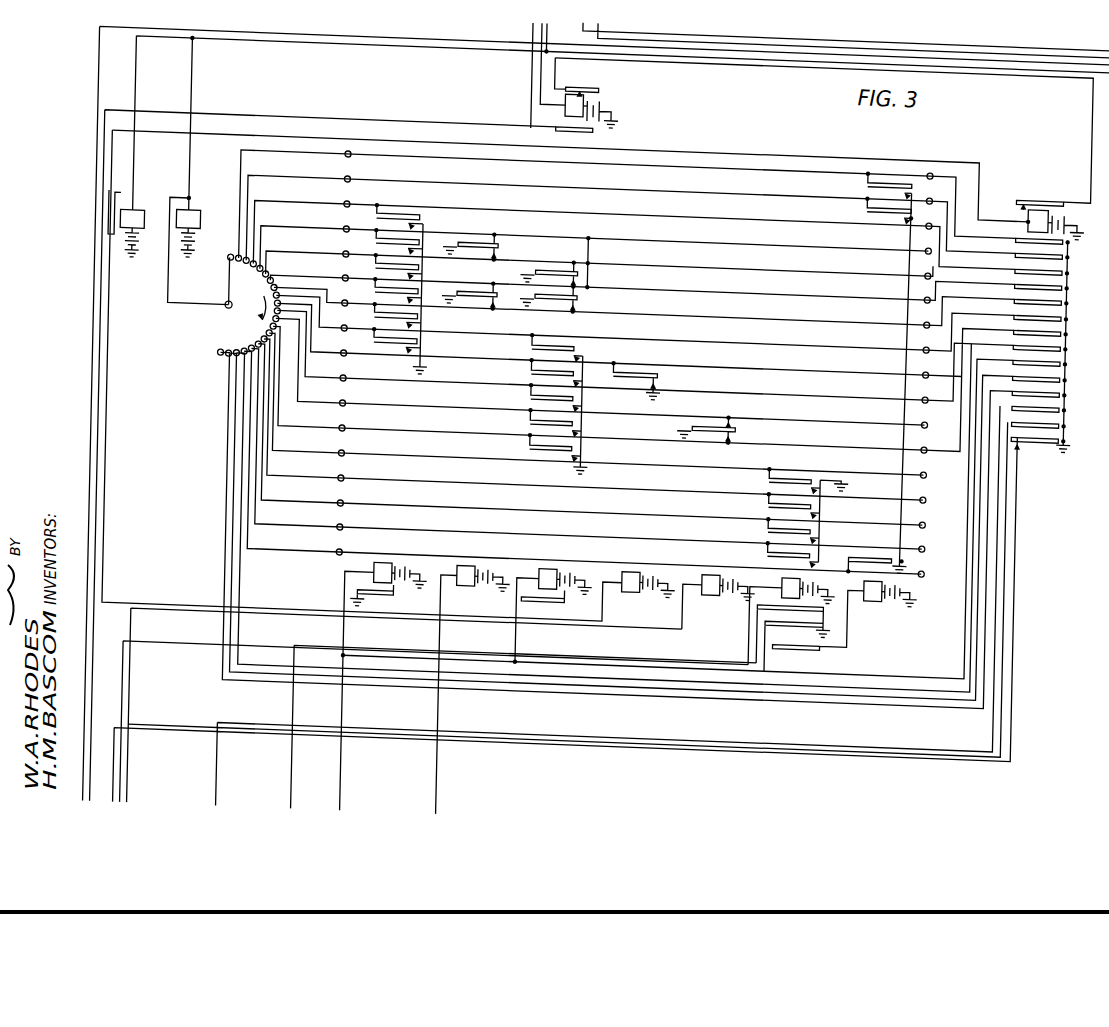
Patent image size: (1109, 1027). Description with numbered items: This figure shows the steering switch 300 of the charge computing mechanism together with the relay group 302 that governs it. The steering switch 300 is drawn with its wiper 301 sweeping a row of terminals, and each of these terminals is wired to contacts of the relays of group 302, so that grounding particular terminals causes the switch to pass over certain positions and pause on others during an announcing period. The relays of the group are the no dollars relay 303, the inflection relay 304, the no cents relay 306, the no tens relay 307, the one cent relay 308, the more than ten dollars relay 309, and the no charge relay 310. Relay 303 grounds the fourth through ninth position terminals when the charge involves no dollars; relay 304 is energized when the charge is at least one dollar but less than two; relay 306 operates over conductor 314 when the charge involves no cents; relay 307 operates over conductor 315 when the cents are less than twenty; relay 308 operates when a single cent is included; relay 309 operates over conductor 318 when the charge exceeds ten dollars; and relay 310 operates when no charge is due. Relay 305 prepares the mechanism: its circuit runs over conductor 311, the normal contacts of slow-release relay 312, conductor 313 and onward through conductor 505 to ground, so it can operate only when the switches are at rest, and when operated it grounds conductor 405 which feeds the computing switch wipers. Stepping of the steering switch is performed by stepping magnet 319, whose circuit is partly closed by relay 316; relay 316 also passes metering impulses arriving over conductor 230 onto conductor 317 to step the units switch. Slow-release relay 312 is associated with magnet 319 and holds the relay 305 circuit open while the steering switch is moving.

The conductor 505 is at (360, 36).
The conductor 317 is at (327, 119).
The conductor 311 is at (751, 139).
The conductor 313 is at (113, 428).
The conductor 230 is at (525, 87).
The relay 316 is at (588, 108).
The relay 305 is at (1027, 187).
The slow-release relay 312 is at (138, 218).
The stepping magnet 319 is at (191, 216).
The wiper 301 is at (231, 301).
The steering switch 300 is at (211, 304).
The relay group 302 is at (644, 428).
The no dollars relay 303 is at (381, 563).
The inflection relay 304 is at (470, 582).
The no cents relay 306 is at (555, 582).
The no tens relay 307 is at (641, 582).
The one cent relay 308 is at (720, 582).
The more than ten dollars relay 309 is at (791, 569).
The no charge relay 310 is at (883, 582).
The conductor 314 is at (163, 650).
The conductor 315 is at (141, 640).
The conductor 318 is at (305, 763).
The conductor 405 is at (272, 727).